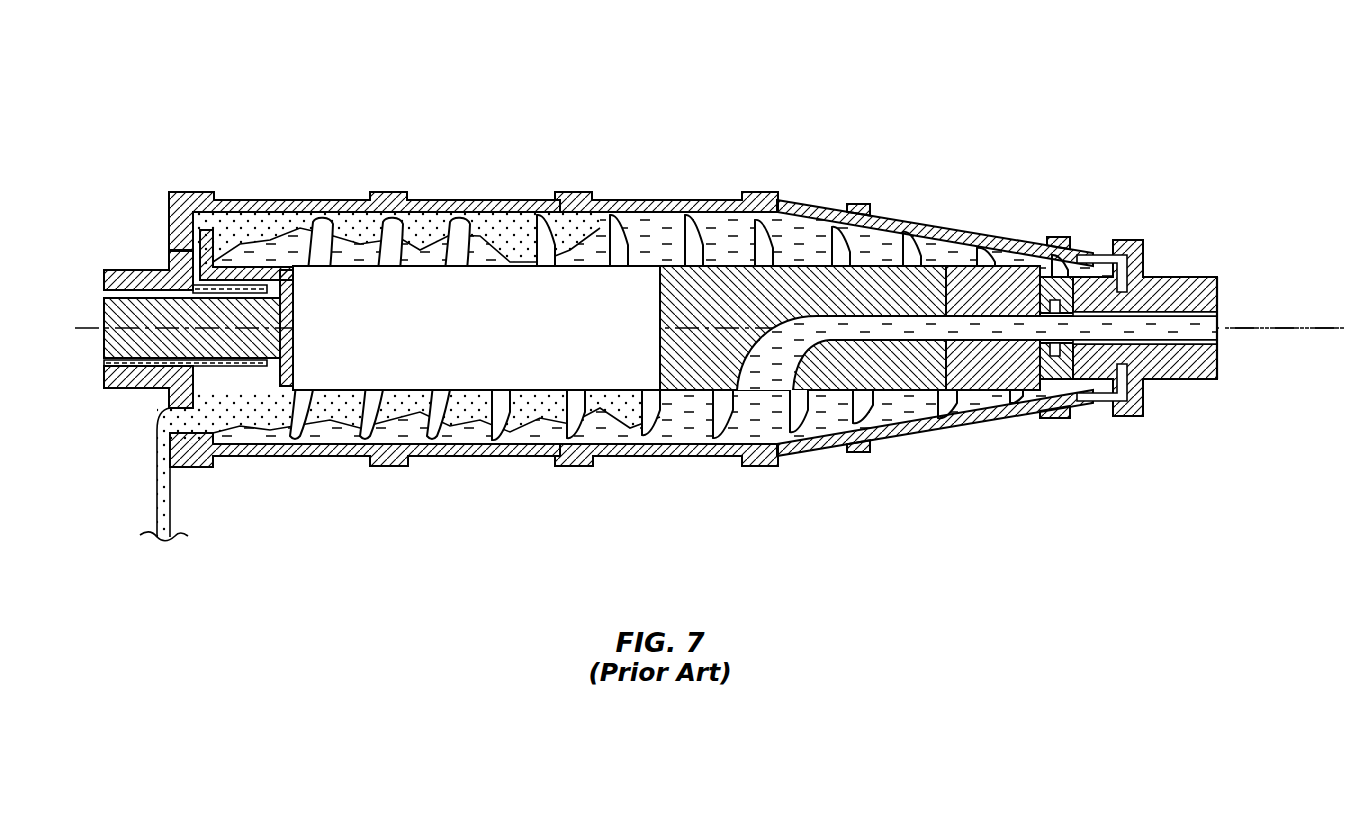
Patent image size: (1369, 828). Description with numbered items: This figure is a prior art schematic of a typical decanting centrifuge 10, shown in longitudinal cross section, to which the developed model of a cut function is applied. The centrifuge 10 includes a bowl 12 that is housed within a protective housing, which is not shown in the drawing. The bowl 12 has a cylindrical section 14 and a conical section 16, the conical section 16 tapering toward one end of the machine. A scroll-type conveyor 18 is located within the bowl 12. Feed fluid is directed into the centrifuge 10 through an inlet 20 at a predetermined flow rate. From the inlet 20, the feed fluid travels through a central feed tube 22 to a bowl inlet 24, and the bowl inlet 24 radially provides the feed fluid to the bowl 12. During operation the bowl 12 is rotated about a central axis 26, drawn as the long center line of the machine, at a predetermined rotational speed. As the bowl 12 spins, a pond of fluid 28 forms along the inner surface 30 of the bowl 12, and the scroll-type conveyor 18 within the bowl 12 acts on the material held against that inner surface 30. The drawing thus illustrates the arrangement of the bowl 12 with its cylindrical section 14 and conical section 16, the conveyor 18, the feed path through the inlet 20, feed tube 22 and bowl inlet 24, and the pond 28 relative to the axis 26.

The decanting centrifuge 10 is at (150, 104).
The bowl 12 is at (296, 198).
The cylindrical section 14 is at (672, 198).
The conical section 16 is at (890, 214).
The scroll-type conveyor 18 is at (862, 410).
The inlet 20 is at (1215, 336).
The central feed tube 22 is at (1125, 336).
The bowl inlet 24 is at (746, 372).
The central axis 26 is at (1288, 322).
The pond of fluid 28 is at (375, 443).
The inner surface 30 is at (612, 442).